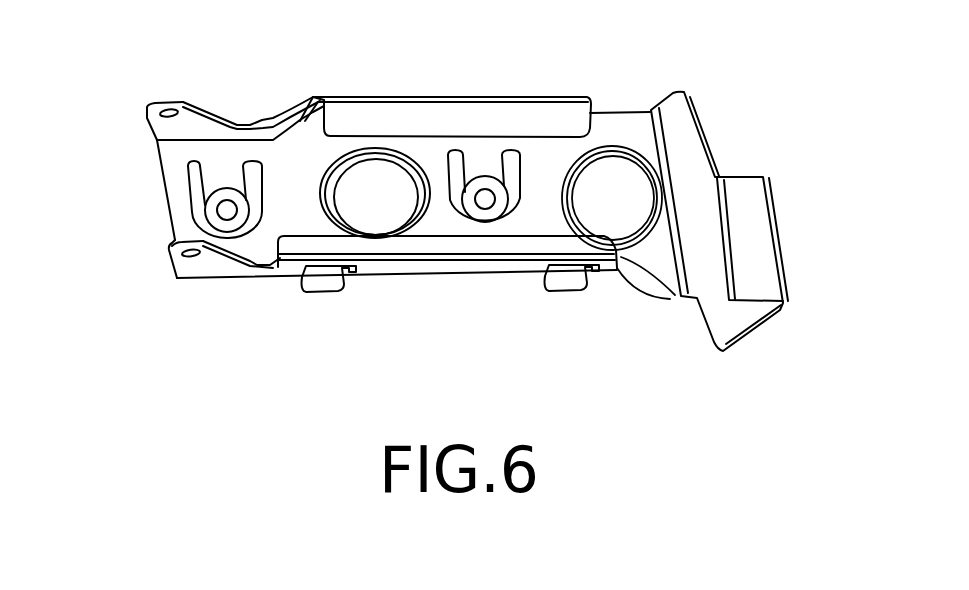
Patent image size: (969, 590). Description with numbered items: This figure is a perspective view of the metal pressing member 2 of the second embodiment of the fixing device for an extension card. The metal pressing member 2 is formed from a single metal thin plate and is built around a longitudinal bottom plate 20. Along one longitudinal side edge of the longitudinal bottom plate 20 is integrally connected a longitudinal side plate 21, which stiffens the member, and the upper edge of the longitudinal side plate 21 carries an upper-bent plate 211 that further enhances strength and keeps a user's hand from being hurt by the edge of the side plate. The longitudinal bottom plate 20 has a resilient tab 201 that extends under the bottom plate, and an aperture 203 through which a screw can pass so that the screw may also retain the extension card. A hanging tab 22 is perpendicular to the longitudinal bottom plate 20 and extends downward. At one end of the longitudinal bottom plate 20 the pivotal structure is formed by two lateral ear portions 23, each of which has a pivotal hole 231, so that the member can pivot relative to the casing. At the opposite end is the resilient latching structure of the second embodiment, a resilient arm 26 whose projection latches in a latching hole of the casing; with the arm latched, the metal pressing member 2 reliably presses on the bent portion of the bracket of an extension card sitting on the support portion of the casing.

The metal pressing member 2 is at (840, 32).
The longitudinal bottom plate 20 is at (283, 216).
The resilient tab 201 is at (488, 203).
The aperture 203 is at (635, 218).
The longitudinal side plate 21 is at (513, 270).
The upper-bent plate 211 is at (553, 247).
The hanging tab 22 is at (560, 293).
The lateral ear portions 23 is at (222, 263).
The pivotal hole 231 is at (157, 118).
The resilient arm 26 is at (693, 153).